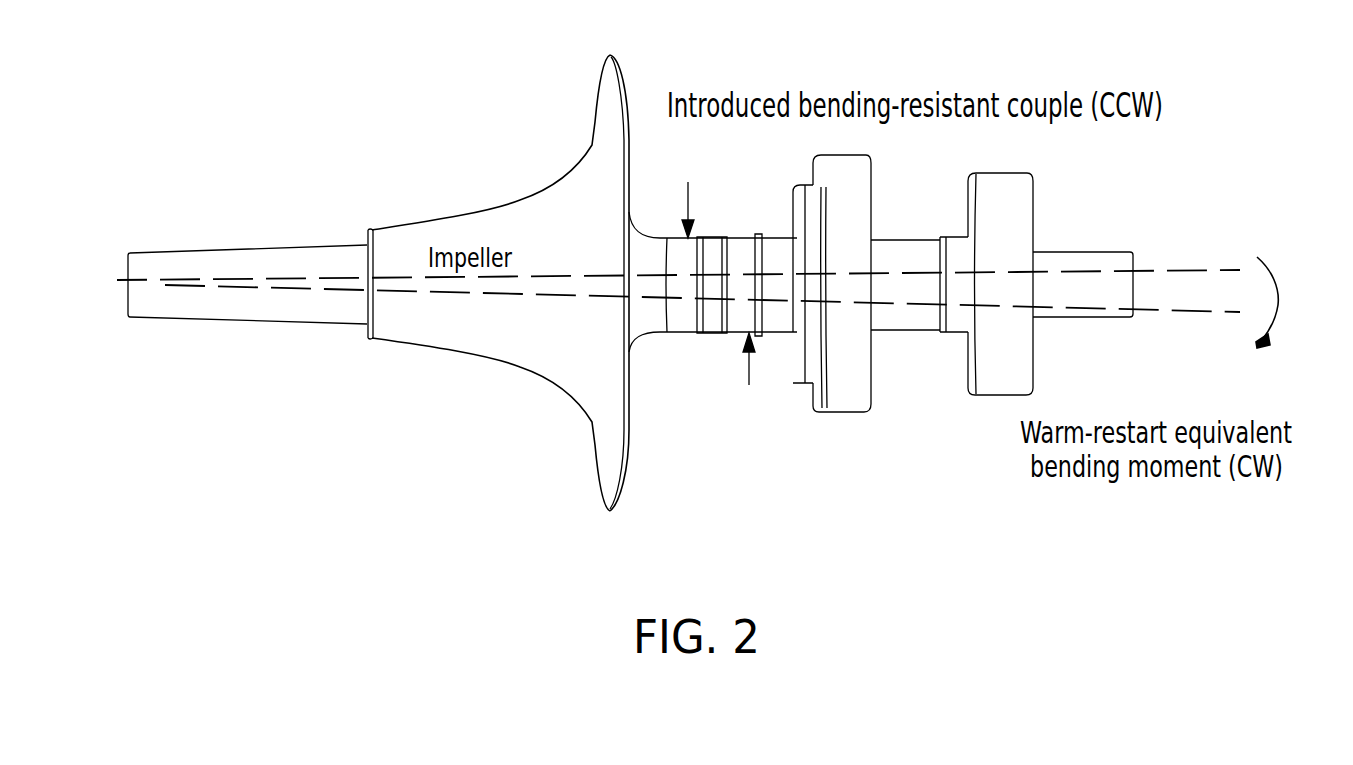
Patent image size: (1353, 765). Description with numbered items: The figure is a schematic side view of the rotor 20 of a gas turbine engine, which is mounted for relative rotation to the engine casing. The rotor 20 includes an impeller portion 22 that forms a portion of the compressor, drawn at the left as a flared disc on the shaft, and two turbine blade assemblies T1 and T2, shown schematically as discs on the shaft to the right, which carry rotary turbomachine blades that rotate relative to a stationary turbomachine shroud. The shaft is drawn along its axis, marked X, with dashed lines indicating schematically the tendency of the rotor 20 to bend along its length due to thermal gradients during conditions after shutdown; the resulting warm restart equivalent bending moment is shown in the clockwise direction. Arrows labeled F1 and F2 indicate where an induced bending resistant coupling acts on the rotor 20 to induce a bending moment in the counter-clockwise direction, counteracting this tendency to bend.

The rotor 20 is at (308, 160).
The impeller portion 22 is at (517, 203).
The rotor axis X is at (670, 289).
The force F1 is at (691, 192).
The force F2 is at (756, 382).
The turbine blade assembly T1 is at (832, 283).
The turbine blade assembly T2 is at (986, 284).